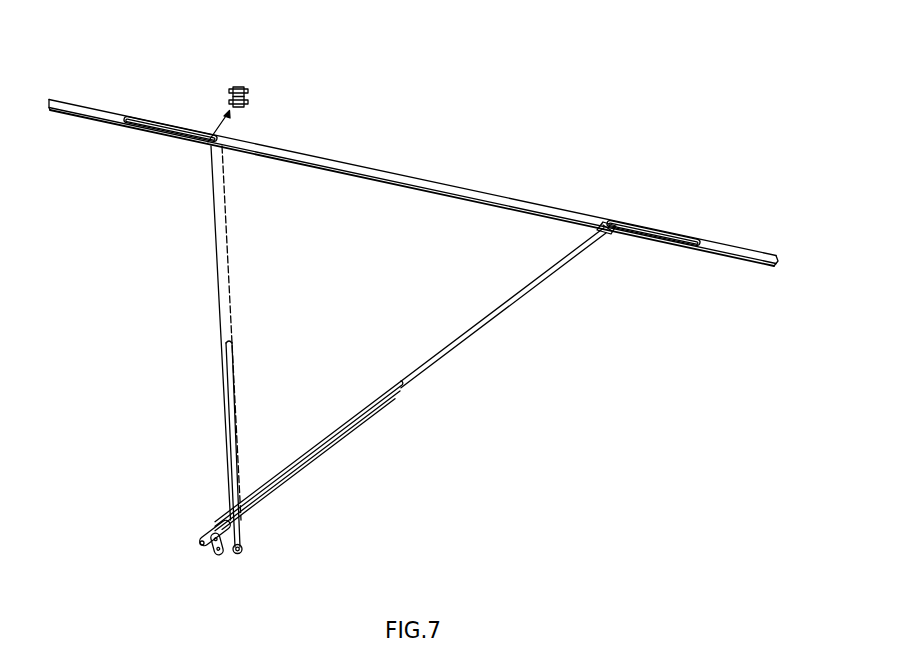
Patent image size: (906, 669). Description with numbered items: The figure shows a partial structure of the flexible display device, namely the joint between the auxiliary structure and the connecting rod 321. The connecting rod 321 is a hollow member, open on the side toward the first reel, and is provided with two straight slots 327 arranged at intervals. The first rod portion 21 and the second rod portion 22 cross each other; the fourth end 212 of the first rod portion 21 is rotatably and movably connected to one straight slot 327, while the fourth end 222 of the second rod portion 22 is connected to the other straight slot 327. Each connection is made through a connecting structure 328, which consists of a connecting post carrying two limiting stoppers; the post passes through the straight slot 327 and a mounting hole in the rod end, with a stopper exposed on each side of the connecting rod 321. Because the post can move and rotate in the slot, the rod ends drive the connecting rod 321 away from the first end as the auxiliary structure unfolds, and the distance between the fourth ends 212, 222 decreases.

The connecting rod 321 is at (348, 160).
The straight slot 327 is at (147, 118).
The connecting structure 328 is at (238, 86).
The second rod portion 22 is at (162, 351).
The fourth end of the second rod portion 222 is at (217, 165).
The first rod portion 21 is at (430, 384).
The fourth end of the first rod portion 212 is at (613, 233).